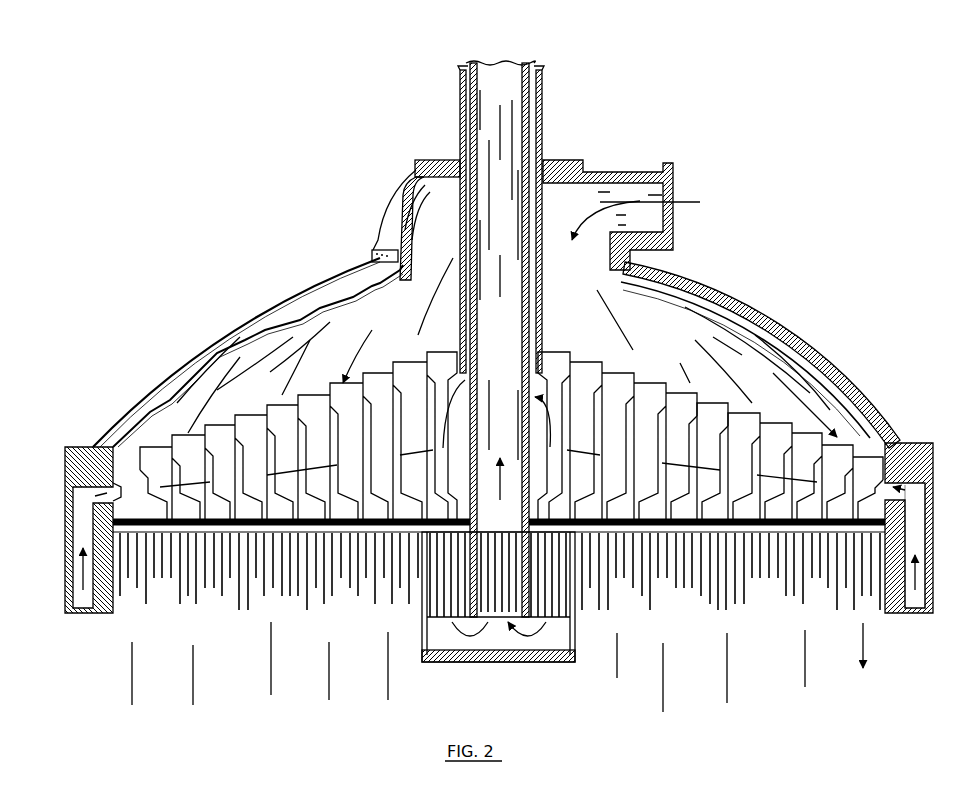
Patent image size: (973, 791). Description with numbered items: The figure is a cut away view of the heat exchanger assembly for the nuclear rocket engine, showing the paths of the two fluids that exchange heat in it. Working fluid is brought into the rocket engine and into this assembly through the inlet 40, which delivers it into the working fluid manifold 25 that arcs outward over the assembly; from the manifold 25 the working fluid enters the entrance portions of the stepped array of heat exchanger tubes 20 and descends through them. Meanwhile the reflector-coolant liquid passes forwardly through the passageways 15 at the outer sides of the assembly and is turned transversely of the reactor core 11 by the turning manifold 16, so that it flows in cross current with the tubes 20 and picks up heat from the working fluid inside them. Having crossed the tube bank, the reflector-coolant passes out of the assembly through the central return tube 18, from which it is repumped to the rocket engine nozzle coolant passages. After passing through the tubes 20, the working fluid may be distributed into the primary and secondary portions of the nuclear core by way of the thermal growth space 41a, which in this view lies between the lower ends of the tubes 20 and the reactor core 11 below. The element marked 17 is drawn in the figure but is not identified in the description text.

The reactor core 11 is at (152, 611).
The passageways 15 is at (915, 545).
The turning manifold 16 is at (933, 474).
The air distribution ducts 17 is at (770, 413).
The return tube 18 is at (532, 127).
The heat exchanger tubes 20 is at (707, 407).
The working fluid manifold 25 is at (655, 300).
The inlet 40 is at (623, 173).
The thermal growth space 41a is at (137, 528).